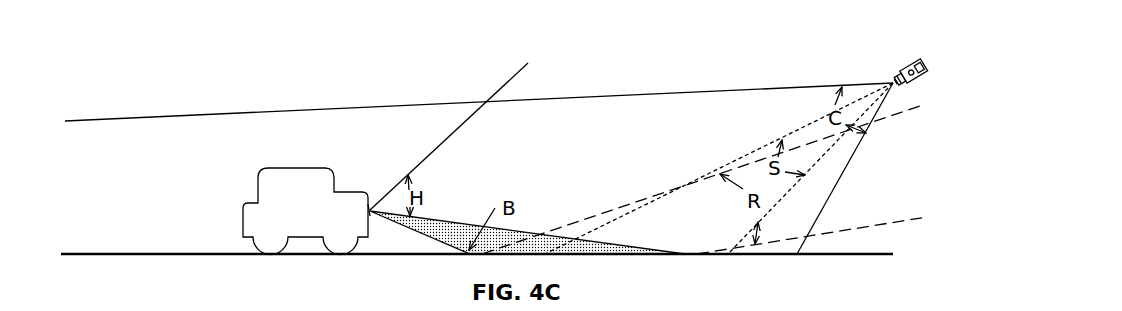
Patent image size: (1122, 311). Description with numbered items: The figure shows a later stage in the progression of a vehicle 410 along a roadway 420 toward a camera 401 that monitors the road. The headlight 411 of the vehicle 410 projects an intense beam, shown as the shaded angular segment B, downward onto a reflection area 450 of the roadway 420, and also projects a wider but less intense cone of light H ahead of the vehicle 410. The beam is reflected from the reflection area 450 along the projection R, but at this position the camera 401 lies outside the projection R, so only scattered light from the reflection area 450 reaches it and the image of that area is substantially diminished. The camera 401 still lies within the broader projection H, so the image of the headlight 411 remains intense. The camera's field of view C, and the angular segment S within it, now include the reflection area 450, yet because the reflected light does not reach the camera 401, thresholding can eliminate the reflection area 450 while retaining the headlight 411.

The camera 401 is at (903, 68).
The vehicle 410 is at (269, 220).
The headlight 411 is at (366, 194).
The roadway 420 is at (200, 255).
The reflection area 450 is at (549, 256).